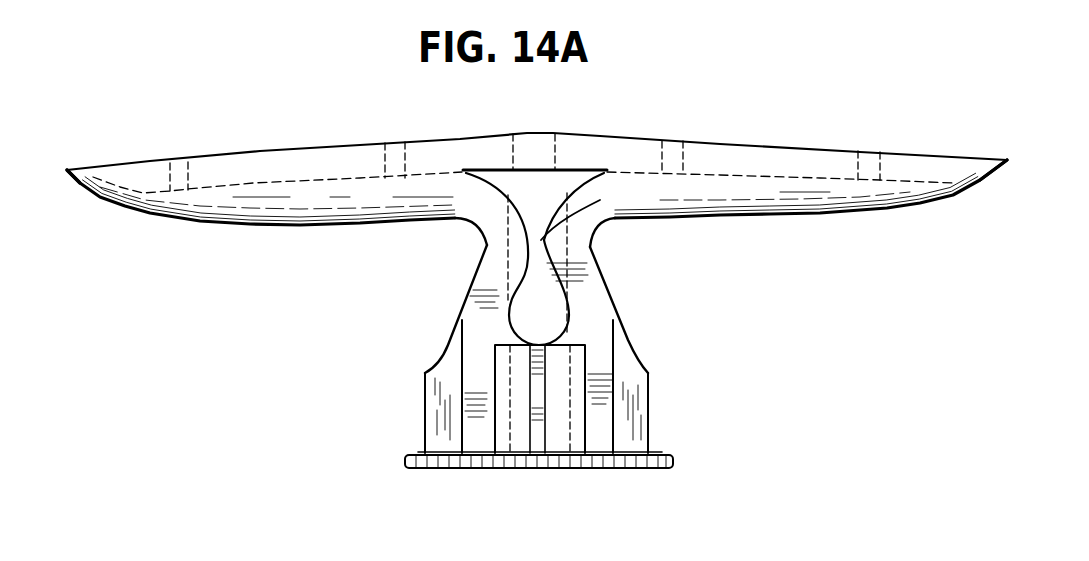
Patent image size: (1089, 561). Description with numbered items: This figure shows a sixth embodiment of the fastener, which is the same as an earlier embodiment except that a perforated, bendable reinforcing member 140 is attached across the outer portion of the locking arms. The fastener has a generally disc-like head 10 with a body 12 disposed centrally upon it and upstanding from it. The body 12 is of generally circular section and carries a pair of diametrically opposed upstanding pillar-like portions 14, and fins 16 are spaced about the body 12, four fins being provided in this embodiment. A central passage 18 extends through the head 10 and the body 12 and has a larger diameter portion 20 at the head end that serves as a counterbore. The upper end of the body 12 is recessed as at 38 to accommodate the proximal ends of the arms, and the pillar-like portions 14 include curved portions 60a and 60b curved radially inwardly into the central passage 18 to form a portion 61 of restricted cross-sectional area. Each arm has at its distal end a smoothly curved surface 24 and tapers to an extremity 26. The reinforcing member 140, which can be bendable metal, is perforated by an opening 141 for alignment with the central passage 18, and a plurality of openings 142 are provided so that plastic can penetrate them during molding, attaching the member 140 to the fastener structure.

The head 10 is at (420, 451).
The body 12 is at (623, 373).
The pillar-like portions 14 is at (475, 320).
The fins 16 is at (443, 412).
The central passage 18 is at (517, 386).
The larger diameter portion 20 is at (513, 460).
The smoothly curved surface 24 is at (918, 208).
The extremity 26 is at (67, 170).
The recess 38 is at (545, 323).
The curved portion 60a is at (592, 248).
The curved portion 60b is at (493, 246).
The portion of restricted cross-sectional area 61 is at (608, 198).
The reinforcing member 140 is at (797, 153).
The opening 141 is at (560, 147).
The openings 142 is at (188, 168).